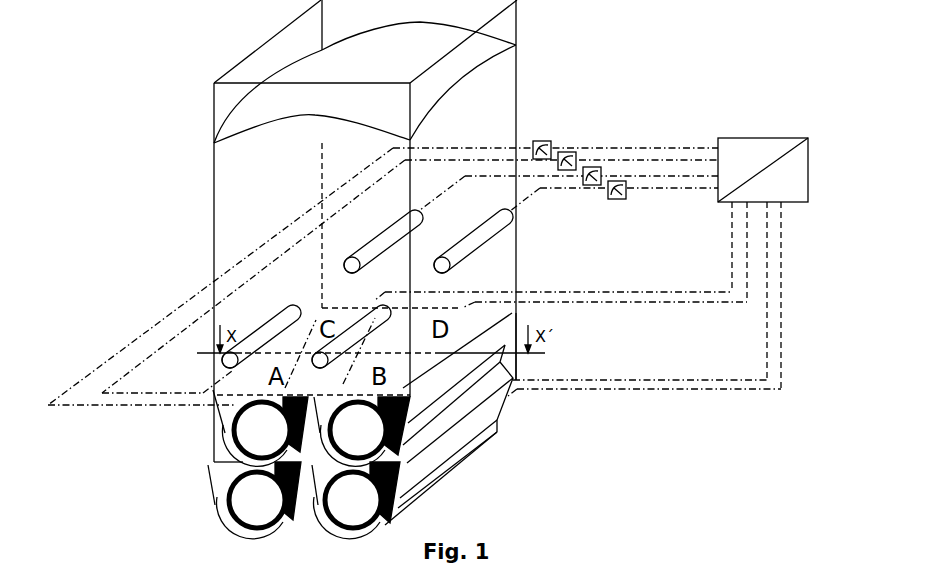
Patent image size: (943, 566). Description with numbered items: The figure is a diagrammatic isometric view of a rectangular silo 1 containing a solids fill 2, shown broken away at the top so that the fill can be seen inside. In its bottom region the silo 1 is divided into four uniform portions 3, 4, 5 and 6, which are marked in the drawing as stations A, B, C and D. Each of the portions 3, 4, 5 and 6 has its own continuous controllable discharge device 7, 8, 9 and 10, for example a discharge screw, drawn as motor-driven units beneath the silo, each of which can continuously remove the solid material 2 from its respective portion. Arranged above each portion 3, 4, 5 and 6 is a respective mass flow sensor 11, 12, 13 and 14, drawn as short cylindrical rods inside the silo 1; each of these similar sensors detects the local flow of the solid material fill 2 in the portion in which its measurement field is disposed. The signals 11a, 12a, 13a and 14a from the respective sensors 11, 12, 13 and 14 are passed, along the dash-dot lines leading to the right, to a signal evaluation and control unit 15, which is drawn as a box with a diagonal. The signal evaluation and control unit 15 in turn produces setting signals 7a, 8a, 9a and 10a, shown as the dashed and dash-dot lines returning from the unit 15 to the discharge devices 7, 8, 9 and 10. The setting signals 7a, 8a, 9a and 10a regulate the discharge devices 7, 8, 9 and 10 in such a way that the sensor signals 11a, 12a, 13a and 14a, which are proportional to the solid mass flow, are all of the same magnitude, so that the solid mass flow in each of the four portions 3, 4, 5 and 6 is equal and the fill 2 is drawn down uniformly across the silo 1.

The rectangular silo 1 is at (518, 27).
The solids fill 2 is at (372, 38).
The portion 3 is at (232, 388).
The portion 4 is at (422, 373).
The portion 5 is at (315, 318).
The portion 6 is at (497, 315).
The controllable discharge device 7 is at (240, 437).
The controllable discharge device 8 is at (402, 408).
The controllable discharge device 9 is at (235, 505).
The controllable discharge device 10 is at (387, 508).
The mass flow sensor 11 is at (275, 326).
The mass flow sensor 12 is at (377, 316).
The mass flow sensor 13 is at (372, 252).
The mass flow sensor 14 is at (458, 250).
The signal evaluation and control unit 15 is at (790, 182).
The setting signal 7a is at (572, 291).
The setting signal 8a is at (587, 303).
The setting signal 9a is at (628, 378).
The setting signal 10a is at (647, 392).
The sensor signal 11a is at (570, 152).
The sensor signal 12a is at (538, 140).
The sensor signal 13a is at (592, 186).
The sensor signal 14a is at (620, 200).